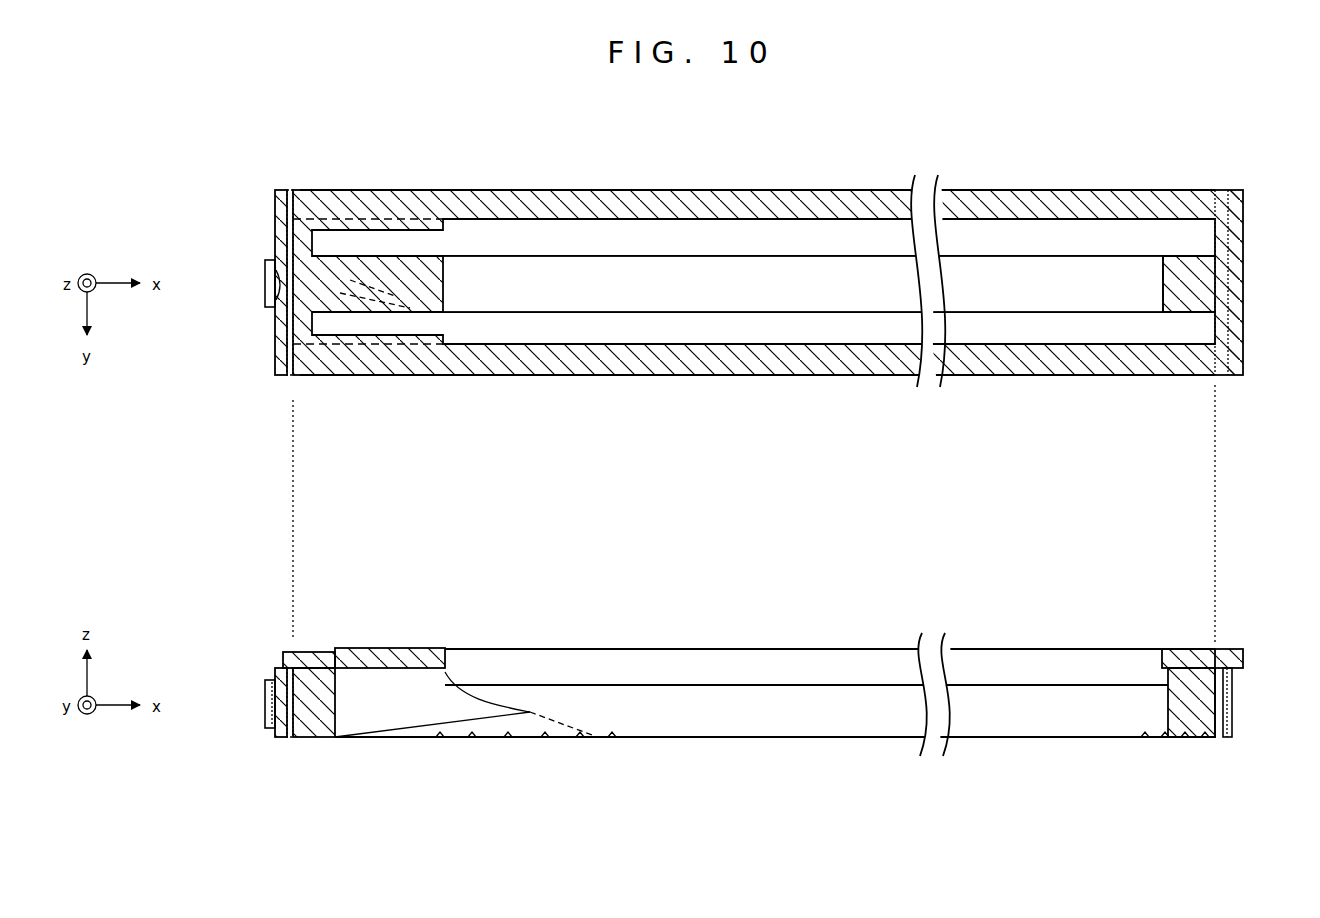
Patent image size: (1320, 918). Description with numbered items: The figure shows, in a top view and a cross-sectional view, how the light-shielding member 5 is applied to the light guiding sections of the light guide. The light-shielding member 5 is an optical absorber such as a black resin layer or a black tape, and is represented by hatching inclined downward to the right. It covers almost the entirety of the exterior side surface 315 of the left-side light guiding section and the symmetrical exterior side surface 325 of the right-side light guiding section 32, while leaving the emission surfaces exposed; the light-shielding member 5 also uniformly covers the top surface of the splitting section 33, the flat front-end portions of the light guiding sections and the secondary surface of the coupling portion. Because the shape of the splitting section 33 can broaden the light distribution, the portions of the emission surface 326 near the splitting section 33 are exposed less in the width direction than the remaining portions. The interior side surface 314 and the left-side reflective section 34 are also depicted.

The light-shielding member 5 is at (455, 206).
The right-side light guiding section 32 is at (718, 332).
The splitting section 33 is at (362, 258).
The left-side reflective section 34 is at (578, 738).
The interior side surface 314 is at (488, 727).
The exterior side surface 315 is at (598, 190).
The exterior side surface 325 is at (597, 377).
The emission surface 326 is at (611, 326).